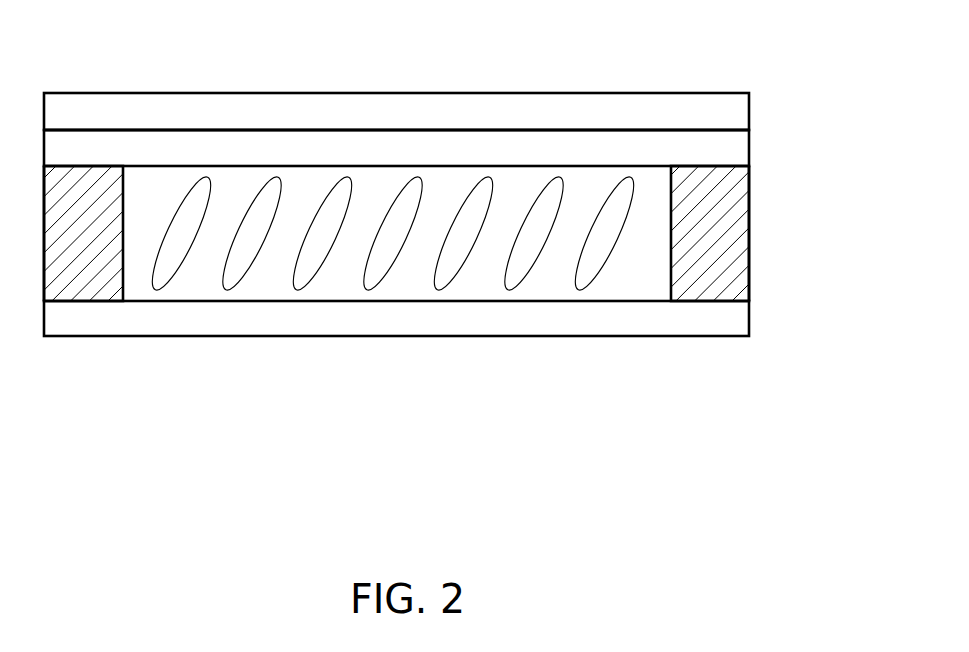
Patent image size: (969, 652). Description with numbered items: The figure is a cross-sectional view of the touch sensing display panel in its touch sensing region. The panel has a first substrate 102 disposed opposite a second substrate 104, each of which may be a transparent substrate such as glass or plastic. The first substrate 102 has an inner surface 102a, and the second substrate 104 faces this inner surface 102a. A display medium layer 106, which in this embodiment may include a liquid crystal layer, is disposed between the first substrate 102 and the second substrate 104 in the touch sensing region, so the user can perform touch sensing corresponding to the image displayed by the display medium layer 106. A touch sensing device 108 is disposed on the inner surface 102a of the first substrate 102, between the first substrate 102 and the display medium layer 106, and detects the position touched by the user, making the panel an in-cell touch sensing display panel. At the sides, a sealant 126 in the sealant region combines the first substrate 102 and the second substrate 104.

The first substrate 102 is at (569, 112).
The inner surface 102a is at (715, 132).
The second substrate 104 is at (730, 318).
The display medium layer 106 is at (610, 237).
The touch sensing device 108 is at (485, 140).
The sealant 126 is at (730, 273).